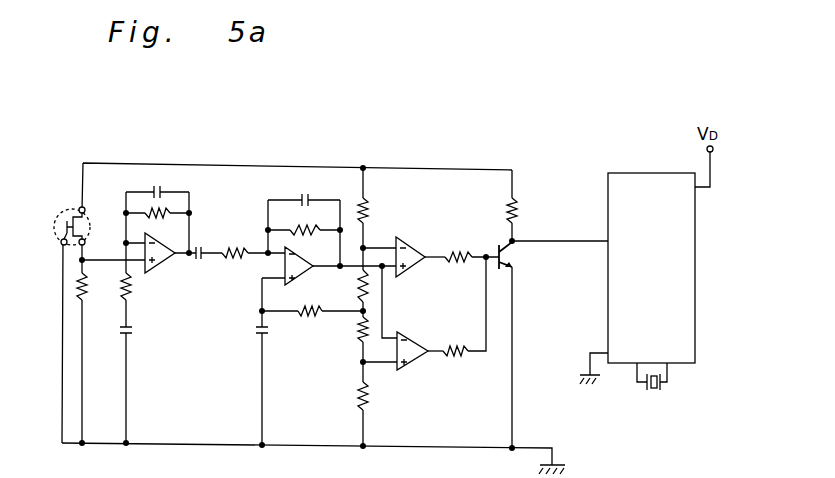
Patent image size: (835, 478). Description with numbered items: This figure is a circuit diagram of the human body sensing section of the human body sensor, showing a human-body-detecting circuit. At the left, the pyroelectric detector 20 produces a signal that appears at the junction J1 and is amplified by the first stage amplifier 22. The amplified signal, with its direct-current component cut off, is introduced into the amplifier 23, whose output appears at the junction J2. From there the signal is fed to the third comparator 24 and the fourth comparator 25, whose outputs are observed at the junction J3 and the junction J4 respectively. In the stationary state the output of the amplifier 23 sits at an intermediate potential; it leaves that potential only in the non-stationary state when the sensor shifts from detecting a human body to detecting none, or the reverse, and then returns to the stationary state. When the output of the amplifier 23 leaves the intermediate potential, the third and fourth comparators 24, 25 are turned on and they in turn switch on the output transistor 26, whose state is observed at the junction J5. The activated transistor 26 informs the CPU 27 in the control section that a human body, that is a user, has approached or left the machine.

The pyroelectric detector 20 is at (56, 211).
The junction J1 is at (87, 264).
The first stage amplifier 22 is at (162, 274).
The amplifier 23 is at (304, 275).
The junction J2 is at (342, 262).
The third comparator 24 is at (412, 249).
The junction J3 is at (435, 255).
The fourth comparator 25 is at (414, 372).
The junction J4 is at (432, 355).
The output transistor 26 is at (512, 255).
The junction J5 is at (515, 239).
The CPU 27 is at (608, 172).